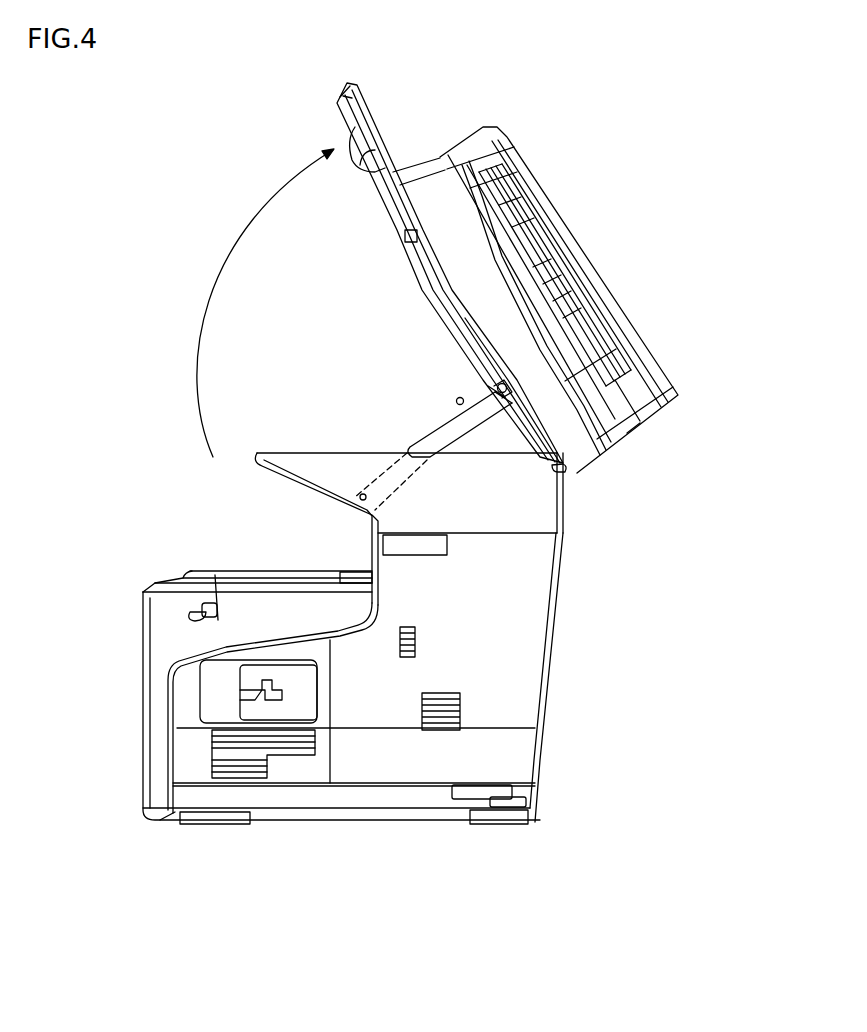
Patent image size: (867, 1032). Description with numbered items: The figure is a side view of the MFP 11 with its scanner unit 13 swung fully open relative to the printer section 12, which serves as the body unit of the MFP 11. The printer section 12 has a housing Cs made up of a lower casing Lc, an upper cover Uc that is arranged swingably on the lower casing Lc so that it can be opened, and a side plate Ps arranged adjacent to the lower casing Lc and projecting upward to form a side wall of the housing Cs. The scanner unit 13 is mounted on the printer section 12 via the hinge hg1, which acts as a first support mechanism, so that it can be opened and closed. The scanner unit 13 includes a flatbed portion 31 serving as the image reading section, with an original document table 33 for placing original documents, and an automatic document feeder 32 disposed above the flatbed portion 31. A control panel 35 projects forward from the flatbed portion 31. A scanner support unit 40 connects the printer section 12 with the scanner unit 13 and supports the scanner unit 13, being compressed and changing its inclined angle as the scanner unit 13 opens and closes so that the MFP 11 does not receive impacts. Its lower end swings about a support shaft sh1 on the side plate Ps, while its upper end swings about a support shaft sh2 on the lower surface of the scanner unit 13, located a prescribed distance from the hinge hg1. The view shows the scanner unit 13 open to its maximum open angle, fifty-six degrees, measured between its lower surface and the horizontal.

The MFP 11 is at (179, 497).
The printer section 12 is at (543, 756).
The scanner unit 13 is at (605, 278).
The flatbed portion 31 is at (477, 261).
The automatic document feeder 32 is at (660, 378).
The original document table 33 is at (530, 213).
The control panel 35 is at (373, 107).
The scanner support unit 40 is at (430, 427).
The support shaft sh1 is at (363, 507).
The support shaft sh2 is at (505, 397).
The hinge hg1 is at (563, 477).
The housing Cs is at (63, 518).
The side plate Ps is at (400, 588).
The upper cover Uc is at (190, 574).
The lower casing Lc is at (157, 624).